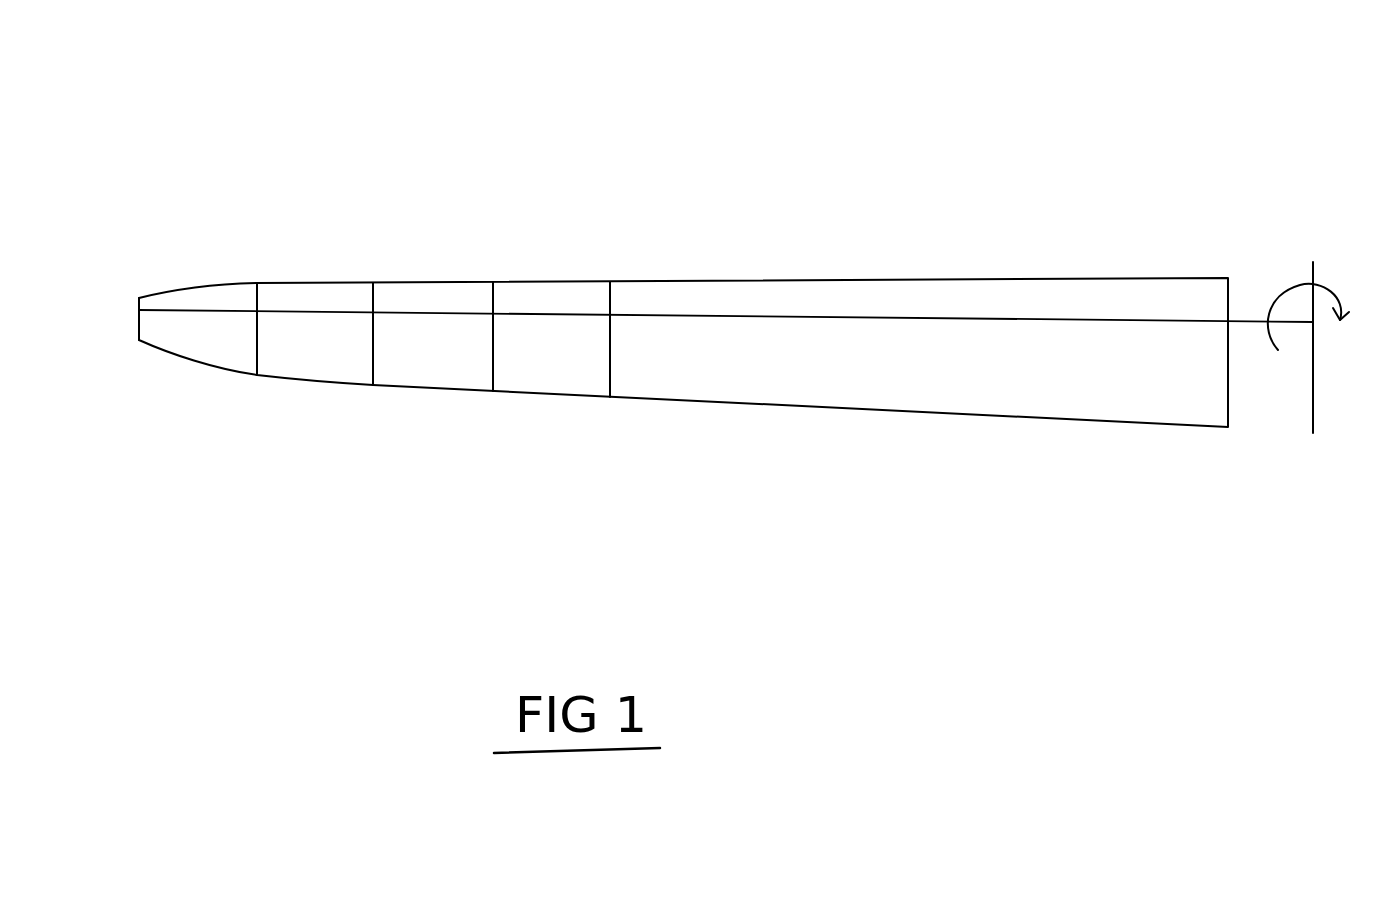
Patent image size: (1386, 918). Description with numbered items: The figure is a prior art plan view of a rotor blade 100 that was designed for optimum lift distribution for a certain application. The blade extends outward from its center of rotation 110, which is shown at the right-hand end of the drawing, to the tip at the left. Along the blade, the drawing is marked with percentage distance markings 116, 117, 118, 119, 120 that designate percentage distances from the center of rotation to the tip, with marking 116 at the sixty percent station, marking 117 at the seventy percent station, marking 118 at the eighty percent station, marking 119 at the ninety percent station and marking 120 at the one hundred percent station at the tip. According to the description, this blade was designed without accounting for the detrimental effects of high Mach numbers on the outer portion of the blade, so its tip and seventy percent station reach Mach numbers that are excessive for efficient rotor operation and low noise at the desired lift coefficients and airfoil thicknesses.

The rotor blade 100 is at (798, 280).
The center of rotation 110 is at (1278, 298).
The percentage distance marking 116 is at (618, 227).
The percentage distance marking 117 is at (500, 237).
The percentage distance marking 118 is at (383, 235).
The percentage distance marking 119 is at (245, 243).
The percentage distance marking 120 is at (127, 243).